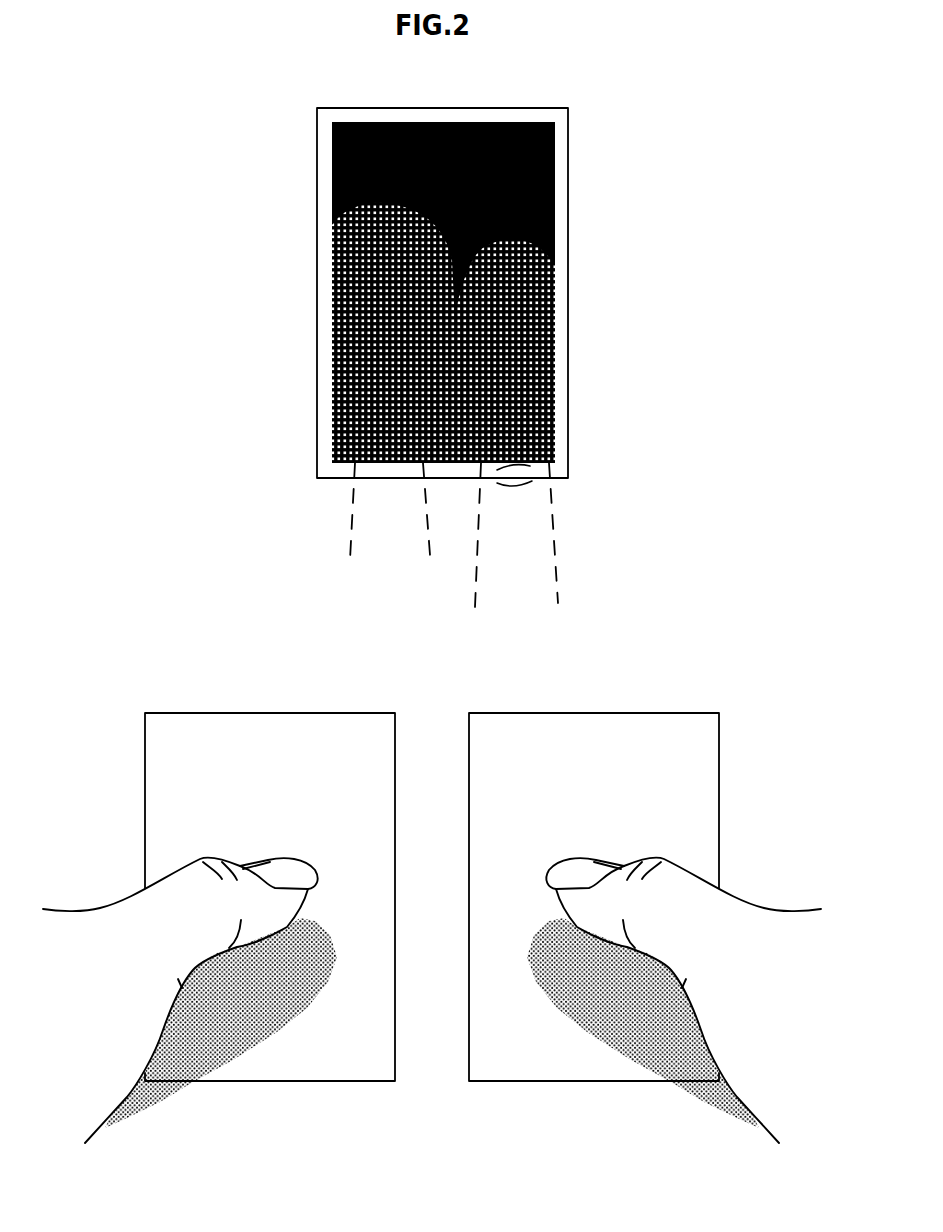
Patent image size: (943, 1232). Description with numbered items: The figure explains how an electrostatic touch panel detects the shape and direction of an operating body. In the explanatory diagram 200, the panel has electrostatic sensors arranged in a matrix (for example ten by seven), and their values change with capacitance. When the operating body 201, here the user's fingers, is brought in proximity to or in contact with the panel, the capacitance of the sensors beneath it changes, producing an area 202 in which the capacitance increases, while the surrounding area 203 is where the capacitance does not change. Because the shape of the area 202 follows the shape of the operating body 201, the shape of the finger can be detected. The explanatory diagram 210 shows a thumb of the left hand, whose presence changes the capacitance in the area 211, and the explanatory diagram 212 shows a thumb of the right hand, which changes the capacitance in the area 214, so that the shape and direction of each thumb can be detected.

The explanatory diagram 200 is at (495, 96).
The operating body 201 is at (548, 482).
The area 202 is at (548, 277).
The area 203 is at (555, 177).
The explanatory diagram 210 is at (295, 700).
The area 211 is at (233, 1035).
The explanatory diagram 212 is at (618, 700).
The area 214 is at (631, 1035).